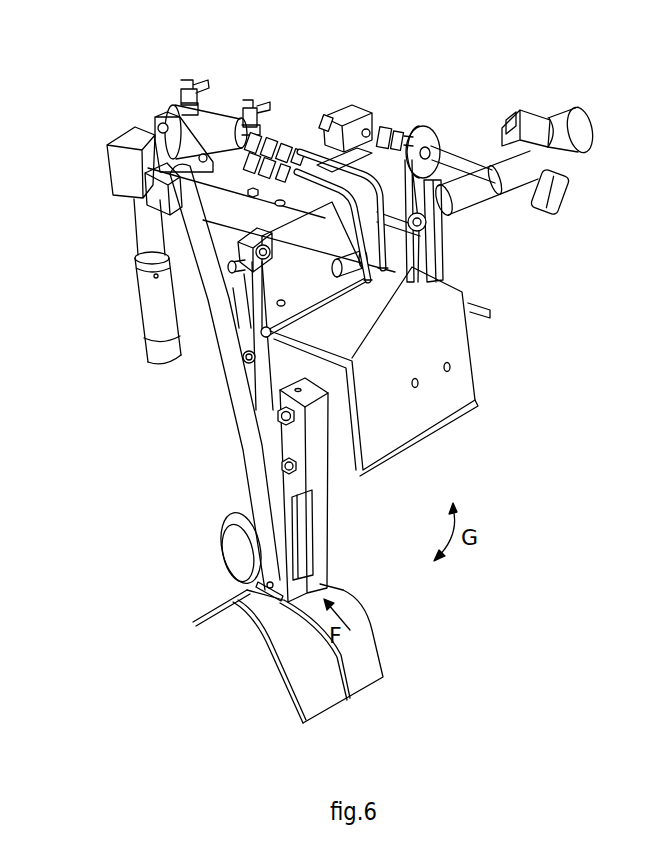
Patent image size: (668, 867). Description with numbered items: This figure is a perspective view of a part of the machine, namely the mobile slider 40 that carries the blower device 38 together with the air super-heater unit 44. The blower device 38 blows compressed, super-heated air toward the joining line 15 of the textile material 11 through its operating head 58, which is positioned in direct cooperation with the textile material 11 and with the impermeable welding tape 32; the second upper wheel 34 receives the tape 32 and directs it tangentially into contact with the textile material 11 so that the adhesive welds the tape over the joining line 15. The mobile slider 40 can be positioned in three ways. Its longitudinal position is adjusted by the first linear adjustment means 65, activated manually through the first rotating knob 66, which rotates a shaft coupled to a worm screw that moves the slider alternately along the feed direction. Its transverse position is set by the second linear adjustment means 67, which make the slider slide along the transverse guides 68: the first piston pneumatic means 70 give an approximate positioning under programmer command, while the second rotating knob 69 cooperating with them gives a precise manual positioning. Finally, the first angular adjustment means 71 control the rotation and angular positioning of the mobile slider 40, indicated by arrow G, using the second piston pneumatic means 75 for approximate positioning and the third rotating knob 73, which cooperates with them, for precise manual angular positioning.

The mobile slider 40 is at (306, 53).
The first angular adjustment means 71 is at (449, 112).
The second linear adjustment means 67 is at (492, 128).
The second piston pneumatic means 75 is at (458, 165).
The second rotating knob 69 is at (585, 113).
The third rotating knob 73 is at (552, 197).
The first piston pneumatic means 70 is at (472, 194).
The first linear adjustment means 65 is at (120, 228).
The first rotating knob 66 is at (155, 352).
The transverse guides 68 is at (247, 357).
The impermeable welding tape 32 is at (243, 422).
The second upper wheel 34 is at (232, 555).
The blower device 38 is at (332, 542).
The air super-heater unit 44 is at (457, 402).
The operating head 58 is at (253, 614).
The textile material 11 is at (372, 657).
The joining line 15 is at (348, 700).